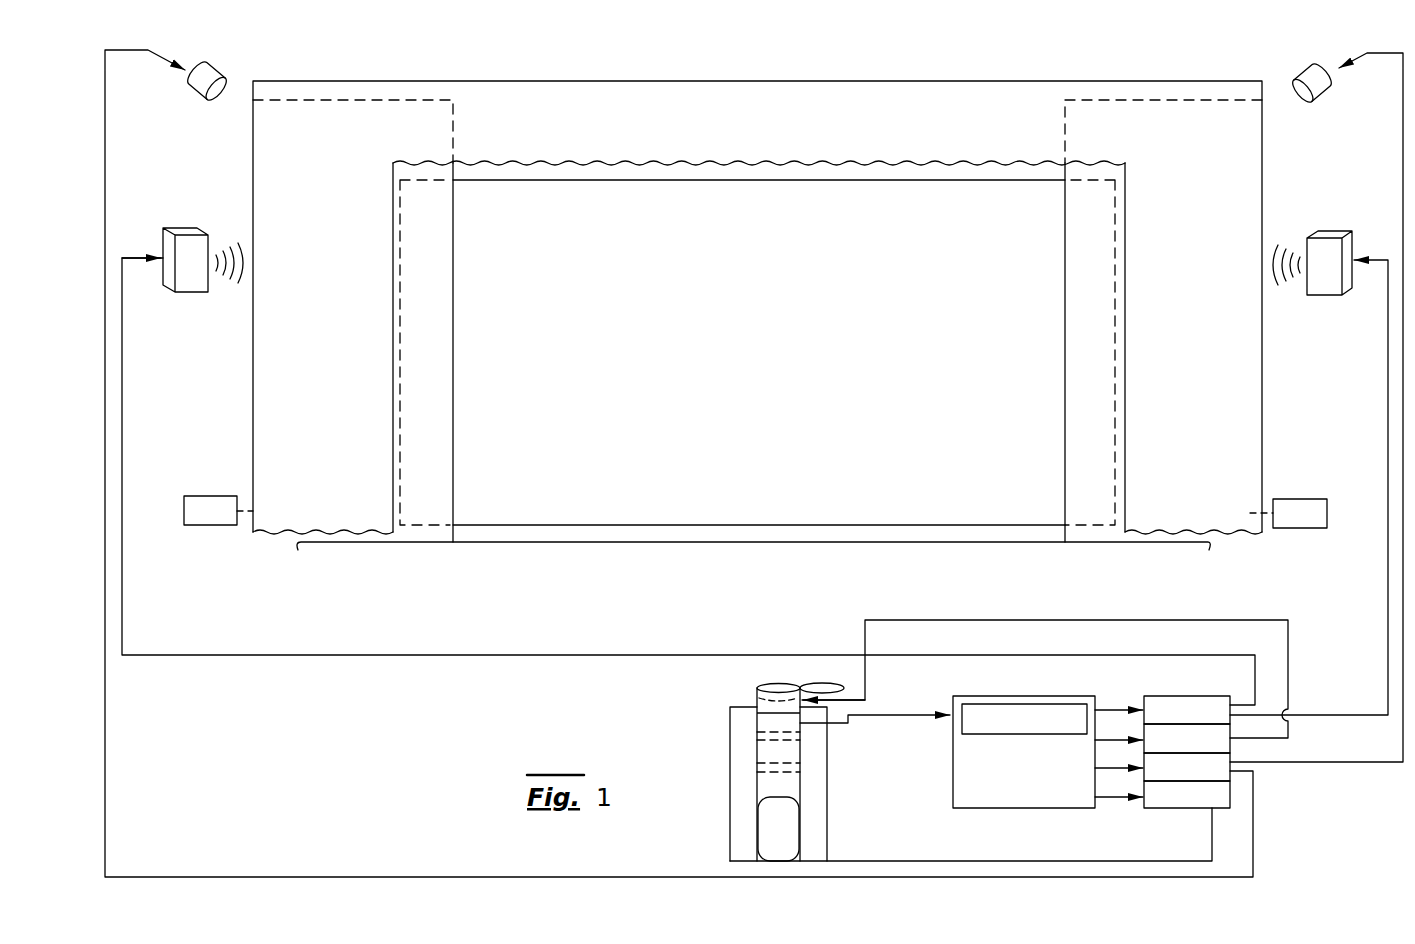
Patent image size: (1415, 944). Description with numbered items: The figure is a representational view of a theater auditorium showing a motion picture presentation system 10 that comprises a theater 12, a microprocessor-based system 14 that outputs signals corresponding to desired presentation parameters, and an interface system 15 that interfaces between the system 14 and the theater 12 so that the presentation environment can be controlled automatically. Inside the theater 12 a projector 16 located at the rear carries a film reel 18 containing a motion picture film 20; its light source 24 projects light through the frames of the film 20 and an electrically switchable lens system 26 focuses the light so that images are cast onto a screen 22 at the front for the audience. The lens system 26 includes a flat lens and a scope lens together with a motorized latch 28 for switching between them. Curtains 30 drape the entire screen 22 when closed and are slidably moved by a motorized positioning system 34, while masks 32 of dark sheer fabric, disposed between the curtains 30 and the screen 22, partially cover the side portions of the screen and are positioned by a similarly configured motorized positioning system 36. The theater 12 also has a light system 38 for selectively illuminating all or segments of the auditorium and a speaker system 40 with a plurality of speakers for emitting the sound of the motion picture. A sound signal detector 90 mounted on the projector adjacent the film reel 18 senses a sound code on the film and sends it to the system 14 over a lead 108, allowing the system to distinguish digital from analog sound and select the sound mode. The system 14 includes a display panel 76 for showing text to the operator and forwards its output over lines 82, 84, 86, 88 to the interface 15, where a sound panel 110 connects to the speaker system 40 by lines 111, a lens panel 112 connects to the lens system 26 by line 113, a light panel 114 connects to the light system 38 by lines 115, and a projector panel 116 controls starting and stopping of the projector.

The presentation system 10 is at (389, 73).
The theater 12 is at (216, 150).
The microprocessor-based system 14 is at (946, 760).
The interface system 15 is at (1268, 792).
The projector 16 is at (841, 832).
The film reel 18 is at (760, 833).
The motion picture film 20 is at (762, 790).
The screen 22 is at (914, 518).
The light source 24 is at (757, 762).
The lens system 26 is at (760, 687).
The motorized latch 28 is at (755, 699).
The curtains 30 is at (378, 356).
The masks 32 is at (443, 132).
The motorized positioning system 34 is at (219, 496).
The motorized positioning system 36 is at (1296, 498).
The light system 38 is at (207, 68).
The speaker system 40 is at (188, 231).
The display panel 76 is at (980, 727).
The line 82 is at (1111, 707).
The line 84 is at (1102, 741).
The line 86 is at (1102, 769).
The line 88 is at (1110, 800).
The sound signal detector 90 is at (757, 735).
The lead 108 is at (912, 713).
The sound panel 110 is at (1187, 711).
The lines 111 is at (1218, 655).
The lens panel 112 is at (1187, 739).
The line 113 is at (1274, 620).
The light panel 114 is at (1187, 768).
The lines 115 is at (1352, 763).
The projector panel 116 is at (1165, 862).